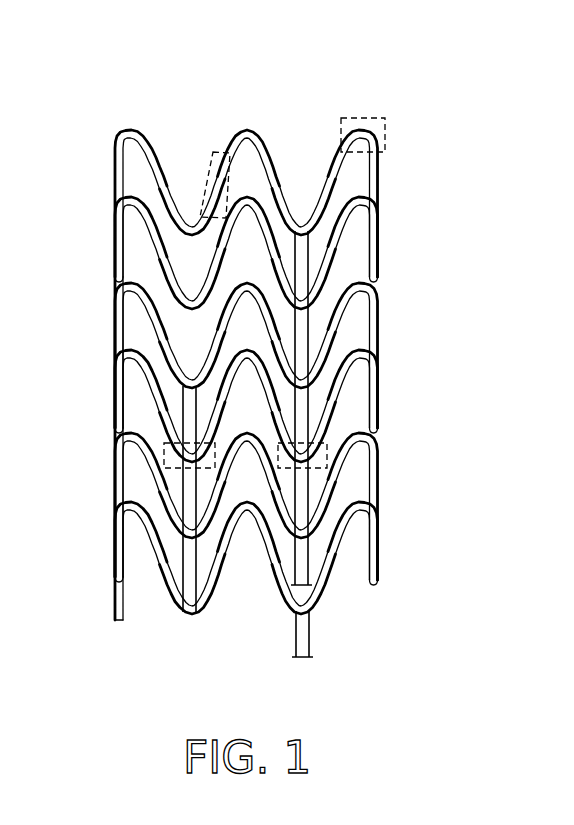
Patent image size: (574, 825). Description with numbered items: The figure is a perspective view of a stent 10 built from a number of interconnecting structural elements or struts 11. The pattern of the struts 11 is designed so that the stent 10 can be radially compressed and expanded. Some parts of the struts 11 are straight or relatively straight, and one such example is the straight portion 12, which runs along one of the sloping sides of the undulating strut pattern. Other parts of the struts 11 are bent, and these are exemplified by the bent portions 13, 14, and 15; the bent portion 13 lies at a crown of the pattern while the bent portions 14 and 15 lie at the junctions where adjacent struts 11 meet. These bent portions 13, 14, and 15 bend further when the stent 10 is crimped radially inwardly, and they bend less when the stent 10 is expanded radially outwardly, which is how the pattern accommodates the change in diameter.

The stent 10 is at (237, 375).
The struts 11 is at (165, 410).
The straight portion 12 is at (212, 170).
The bent portion 13 is at (361, 118).
The bent portion 14 is at (195, 468).
The bent portion 15 is at (328, 462).